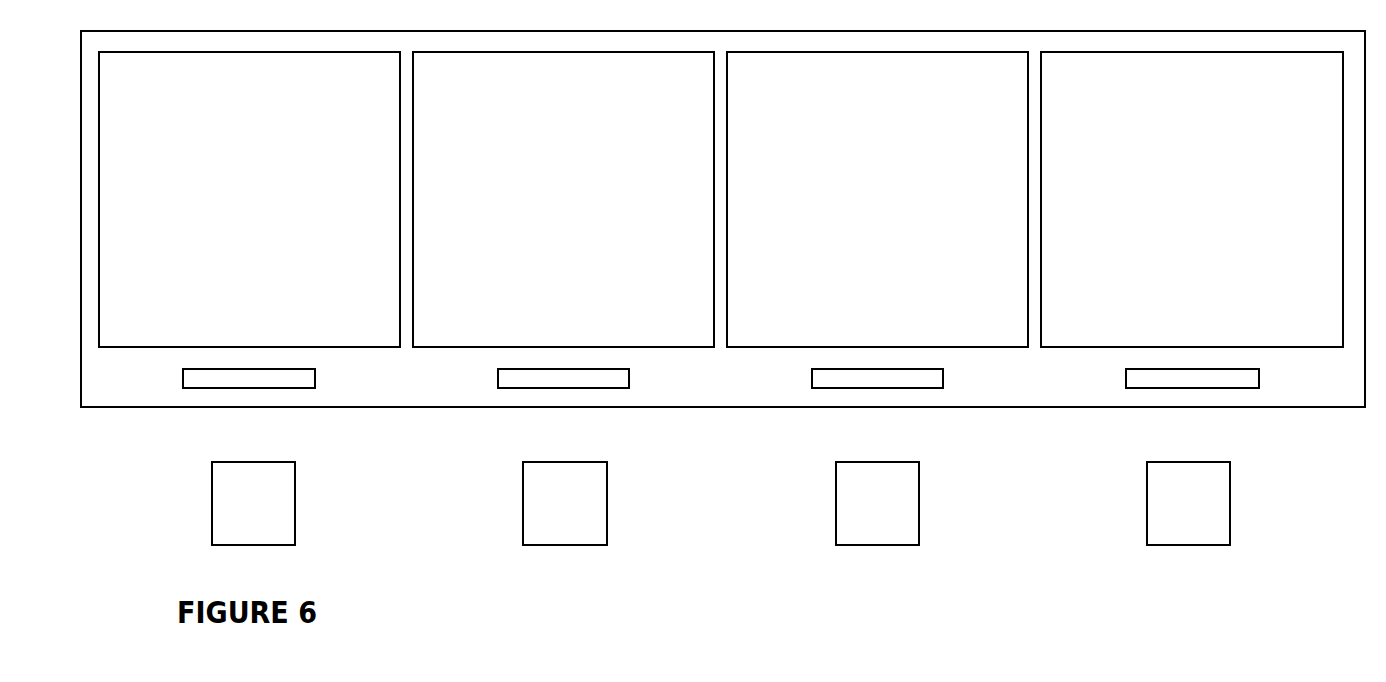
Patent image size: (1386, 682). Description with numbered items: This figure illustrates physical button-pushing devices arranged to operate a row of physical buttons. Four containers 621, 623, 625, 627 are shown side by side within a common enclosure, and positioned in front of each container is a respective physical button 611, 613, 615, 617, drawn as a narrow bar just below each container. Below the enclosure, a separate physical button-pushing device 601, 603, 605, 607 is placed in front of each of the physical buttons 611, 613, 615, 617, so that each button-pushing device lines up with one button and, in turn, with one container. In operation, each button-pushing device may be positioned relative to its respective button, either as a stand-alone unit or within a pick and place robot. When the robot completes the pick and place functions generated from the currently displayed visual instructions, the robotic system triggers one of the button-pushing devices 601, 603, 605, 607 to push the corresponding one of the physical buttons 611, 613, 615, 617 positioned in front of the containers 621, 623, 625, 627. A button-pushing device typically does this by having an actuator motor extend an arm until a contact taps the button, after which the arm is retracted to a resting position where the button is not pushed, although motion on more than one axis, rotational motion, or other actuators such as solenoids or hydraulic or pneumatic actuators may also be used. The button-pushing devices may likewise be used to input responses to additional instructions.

The physical button-pushing device 601 is at (212, 502).
The physical button-pushing device 603 is at (523, 502).
The physical button-pushing device 605 is at (836, 502).
The physical button-pushing device 607 is at (1147, 502).
The physical button 611 is at (227, 388).
The physical button 613 is at (537, 388).
The physical button 615 is at (845, 388).
The physical button 617 is at (1163, 388).
The container 621 is at (127, 342).
The container 623 is at (475, 342).
The container 625 is at (795, 342).
The container 627 is at (1103, 342).